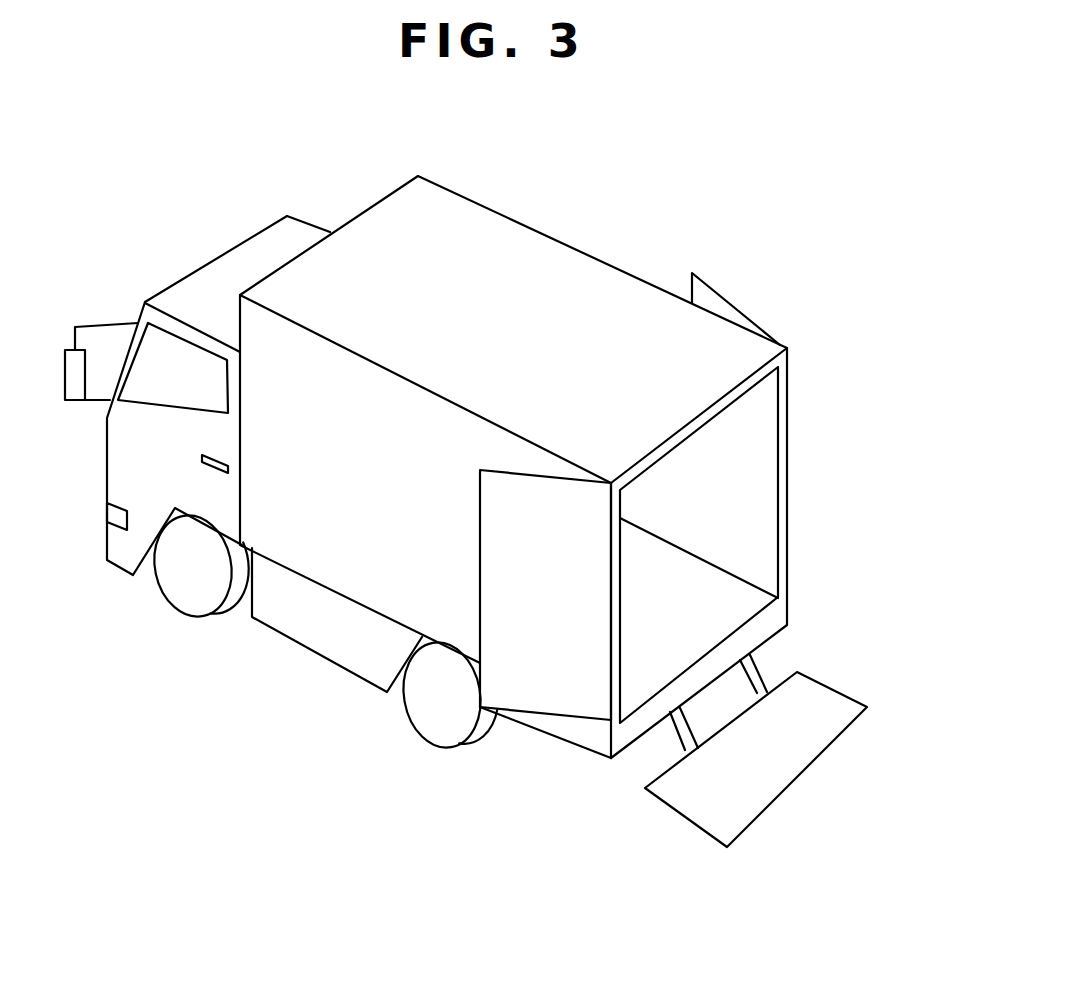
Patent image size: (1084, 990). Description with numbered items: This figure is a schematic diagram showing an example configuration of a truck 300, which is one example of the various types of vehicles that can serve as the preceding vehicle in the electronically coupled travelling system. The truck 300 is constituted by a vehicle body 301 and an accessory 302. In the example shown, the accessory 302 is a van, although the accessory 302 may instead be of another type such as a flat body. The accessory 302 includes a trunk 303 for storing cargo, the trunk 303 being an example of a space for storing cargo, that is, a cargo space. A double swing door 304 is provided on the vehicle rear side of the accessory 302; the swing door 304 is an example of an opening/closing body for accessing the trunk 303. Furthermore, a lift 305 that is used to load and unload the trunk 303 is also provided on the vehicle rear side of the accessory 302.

The truck 300 is at (266, 120).
The vehicle body 301 is at (132, 535).
The accessory 302 is at (507, 222).
The trunk 303 is at (737, 467).
The swing door 304 is at (542, 697).
The lift 305 is at (683, 793).